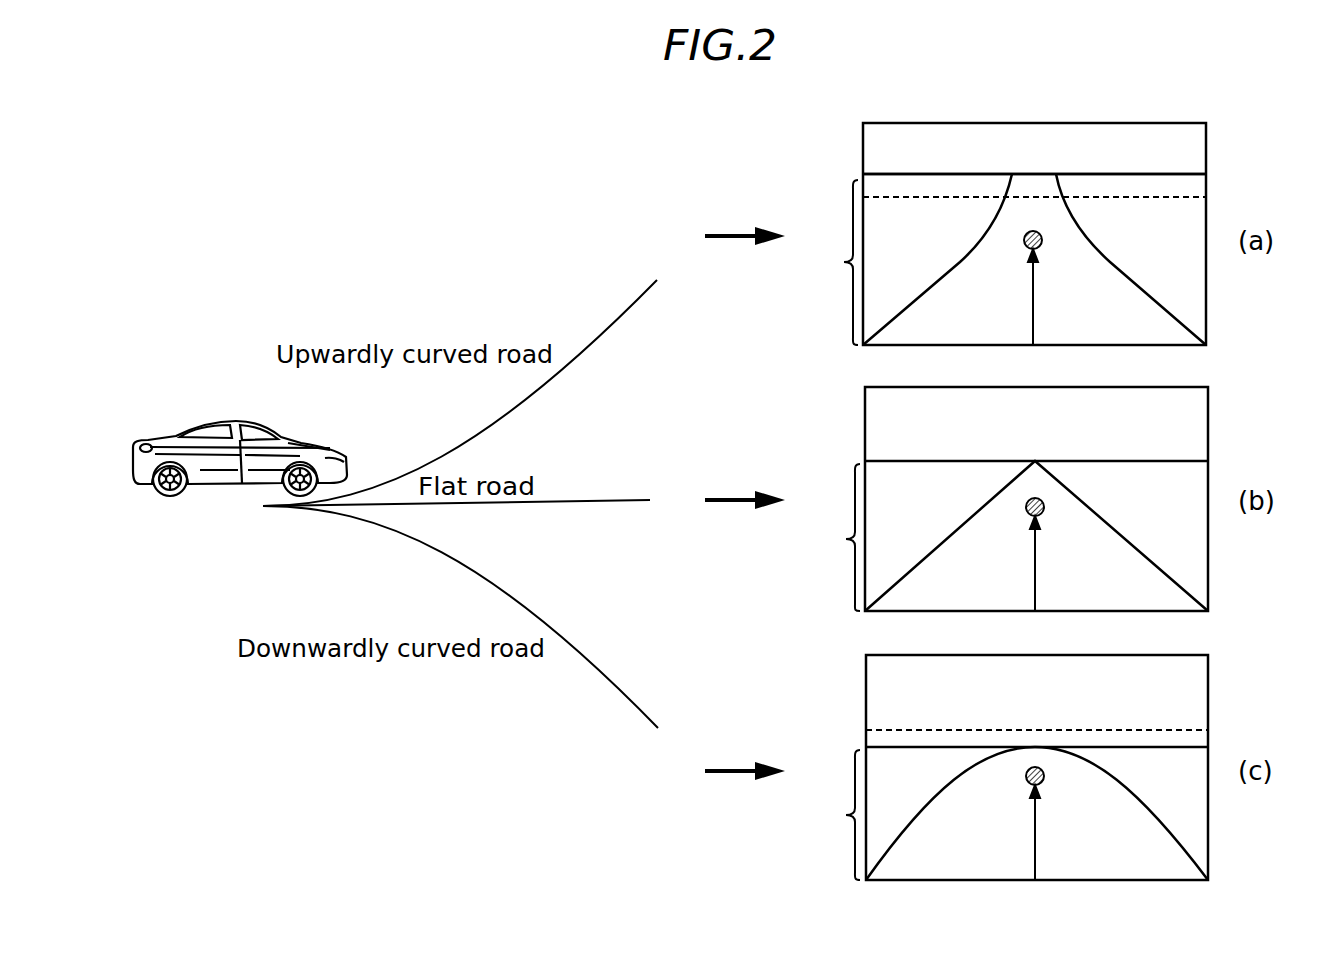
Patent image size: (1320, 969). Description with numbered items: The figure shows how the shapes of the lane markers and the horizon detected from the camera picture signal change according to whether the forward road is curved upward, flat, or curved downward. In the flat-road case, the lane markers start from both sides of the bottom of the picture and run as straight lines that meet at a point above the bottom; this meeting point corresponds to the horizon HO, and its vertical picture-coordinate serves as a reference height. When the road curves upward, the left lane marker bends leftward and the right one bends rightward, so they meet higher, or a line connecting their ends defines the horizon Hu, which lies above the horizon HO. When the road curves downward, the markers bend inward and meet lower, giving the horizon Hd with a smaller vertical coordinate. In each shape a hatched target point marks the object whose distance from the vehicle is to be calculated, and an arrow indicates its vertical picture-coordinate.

The horizon of upwardly curved road Hu is at (1134, 174).
The horizon of flat road HO is at (1121, 461).
The horizon of downwardly curved road Hd is at (1142, 747).